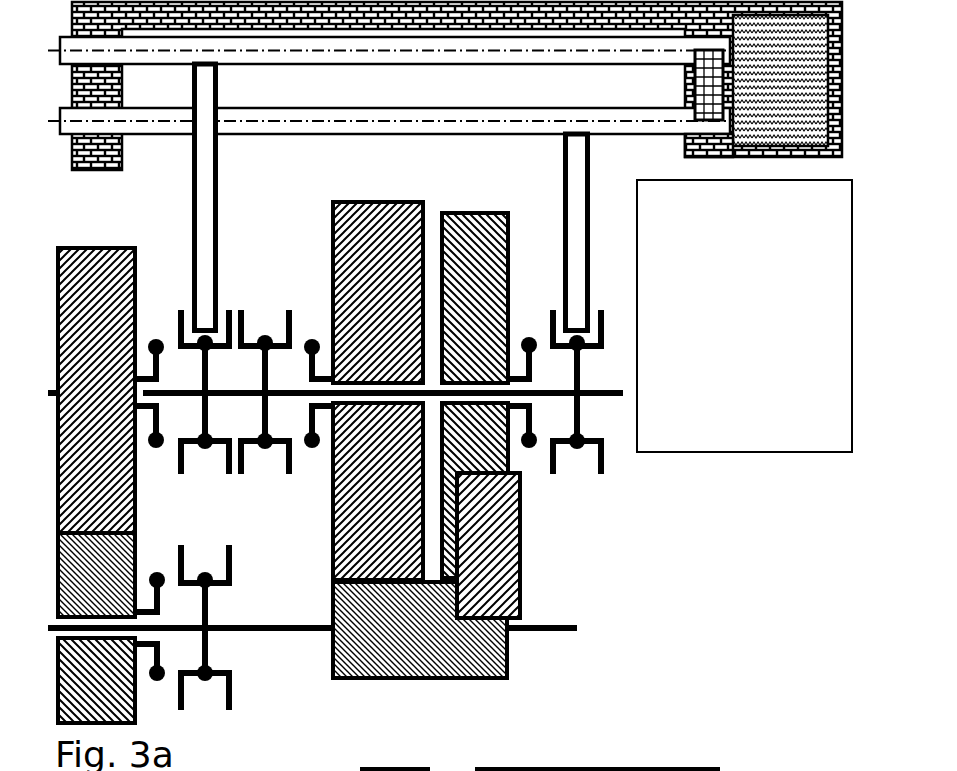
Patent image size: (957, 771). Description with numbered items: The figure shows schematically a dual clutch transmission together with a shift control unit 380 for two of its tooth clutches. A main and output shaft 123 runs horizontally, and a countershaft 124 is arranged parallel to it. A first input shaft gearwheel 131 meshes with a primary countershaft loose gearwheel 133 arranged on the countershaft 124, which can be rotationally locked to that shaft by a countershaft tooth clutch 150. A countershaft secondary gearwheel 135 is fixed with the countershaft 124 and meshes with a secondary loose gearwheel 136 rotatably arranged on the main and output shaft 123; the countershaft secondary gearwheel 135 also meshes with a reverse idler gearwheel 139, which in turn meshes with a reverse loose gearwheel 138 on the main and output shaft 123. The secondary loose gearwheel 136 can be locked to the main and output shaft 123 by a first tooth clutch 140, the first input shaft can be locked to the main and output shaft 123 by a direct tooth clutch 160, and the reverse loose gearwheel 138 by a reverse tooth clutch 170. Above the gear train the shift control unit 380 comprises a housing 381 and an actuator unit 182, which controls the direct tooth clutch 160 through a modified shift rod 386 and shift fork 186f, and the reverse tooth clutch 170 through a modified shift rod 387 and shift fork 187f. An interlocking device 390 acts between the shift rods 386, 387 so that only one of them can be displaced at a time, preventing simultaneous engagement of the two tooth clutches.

The main and output shaft 123 is at (290, 390).
The countershaft 124 is at (278, 632).
The first input shaft gearwheel 131 is at (96, 390).
The primary countershaft loose gearwheel 133 is at (96, 575).
The countershaft secondary gearwheel 135 is at (420, 630).
The secondary loose gearwheel 136 is at (378, 391).
The reverse loose gearwheel 138 is at (508, 458).
The reverse idler gearwheel 139 is at (520, 594).
The first tooth clutch 140 is at (300, 466).
The countershaft tooth clutch 150 is at (228, 593).
The direct tooth clutch 160 is at (168, 466).
The reverse tooth clutch 170 is at (612, 475).
The actuator unit 182 is at (793, 100).
The shift fork 186f is at (218, 170).
The shift fork 187f is at (592, 243).
The shift control unit 380 is at (707, 447).
The shift control housing 381 is at (747, 160).
The modified shift rod 386 is at (637, 64).
The modified shift rod 387 is at (710, 100).
The interlocking device 390 is at (712, 135).